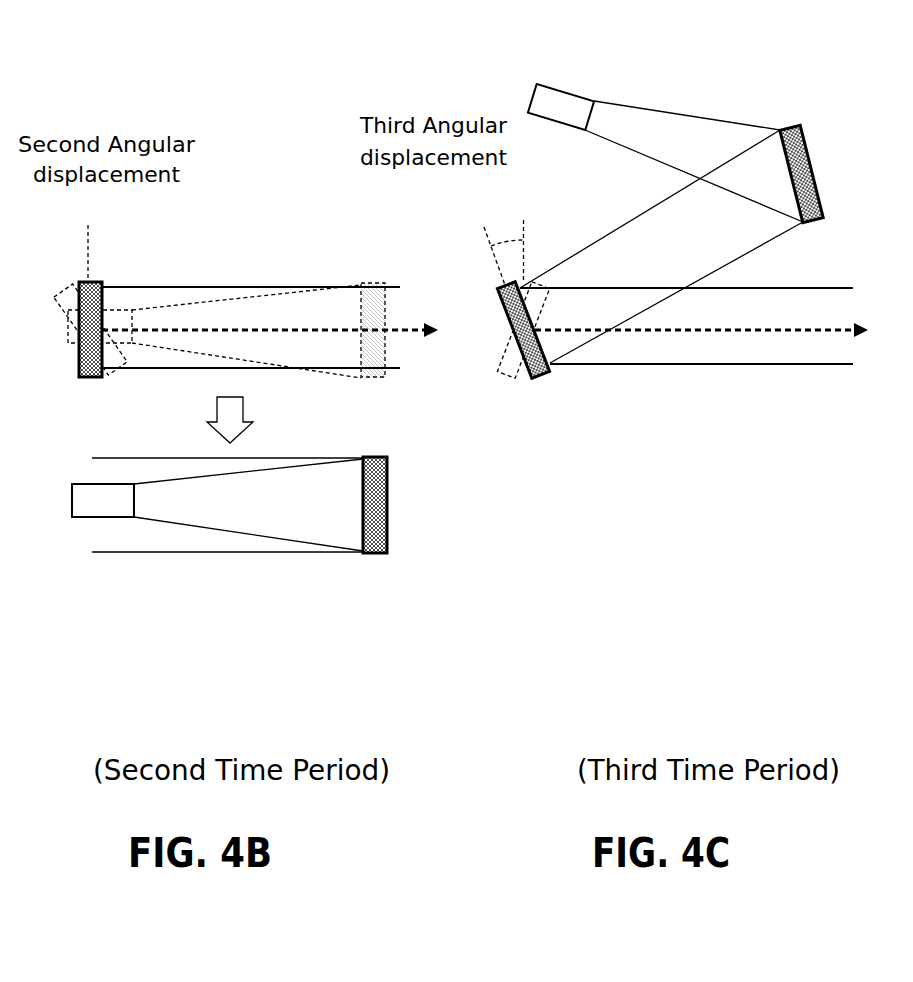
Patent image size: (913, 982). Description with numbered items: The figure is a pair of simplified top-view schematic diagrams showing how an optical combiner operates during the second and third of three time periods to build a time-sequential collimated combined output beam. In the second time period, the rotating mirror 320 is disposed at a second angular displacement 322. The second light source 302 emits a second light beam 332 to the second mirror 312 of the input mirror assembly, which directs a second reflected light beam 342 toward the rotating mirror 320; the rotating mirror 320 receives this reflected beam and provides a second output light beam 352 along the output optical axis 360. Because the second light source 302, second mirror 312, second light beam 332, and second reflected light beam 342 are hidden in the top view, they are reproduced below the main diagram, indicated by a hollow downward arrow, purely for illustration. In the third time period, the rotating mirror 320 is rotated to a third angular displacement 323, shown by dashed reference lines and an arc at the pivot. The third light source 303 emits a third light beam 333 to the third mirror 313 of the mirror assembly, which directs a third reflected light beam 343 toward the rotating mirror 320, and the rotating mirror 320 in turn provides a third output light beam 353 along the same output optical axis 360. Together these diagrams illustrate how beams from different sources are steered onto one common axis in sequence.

In FIG. 4B, the second light source 302 is at (115, 522).
In FIG. 4C, the third light source 303 is at (556, 86).
In FIG. 4B, the second mirror 312 is at (387, 543).
In FIG. 4C, the third mirror 313 is at (801, 131).
In FIG. 4B, the rotating mirror 320 is at (90, 378).
In FIG. 4C, the rotating mirror 320 is at (540, 378).
In FIG. 4B, the second angular displacement 322 is at (87, 236).
In FIG. 4C, the third angular displacement 323 is at (510, 240).
In FIG. 4B, the second light beam 332 is at (175, 525).
In FIG. 4C, the third light beam 333 is at (696, 116).
In FIG. 4B, the second reflected light beam 342 is at (258, 555).
In FIG. 4C, the third reflected light beam 343 is at (621, 226).
In FIG. 4B, the second output light beam 352 is at (292, 285).
In FIG. 4C, the third output light beam 353 is at (742, 367).
In FIG. 4B, the output optical axis 360 is at (395, 328).
In FIG. 4C, the output optical axis 360 is at (838, 328).